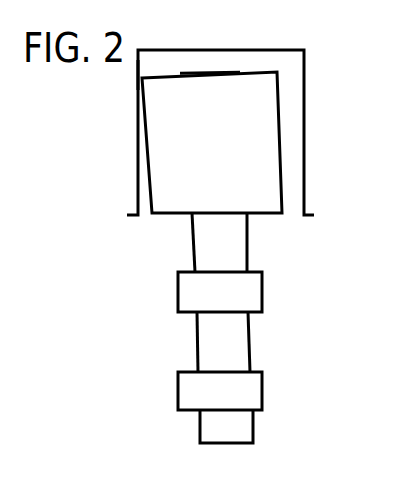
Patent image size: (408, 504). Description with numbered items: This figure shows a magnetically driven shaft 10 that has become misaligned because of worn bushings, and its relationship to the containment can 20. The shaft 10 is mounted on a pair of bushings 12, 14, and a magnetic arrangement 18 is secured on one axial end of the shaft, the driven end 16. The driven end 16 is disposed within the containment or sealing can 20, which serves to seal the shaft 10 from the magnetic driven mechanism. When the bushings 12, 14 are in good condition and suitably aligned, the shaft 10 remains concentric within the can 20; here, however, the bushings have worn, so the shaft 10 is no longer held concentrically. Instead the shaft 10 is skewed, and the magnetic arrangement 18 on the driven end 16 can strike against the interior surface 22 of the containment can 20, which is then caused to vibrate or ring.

The magnetically driven shaft 10 is at (230, 253).
The bushing 12 is at (262, 298).
The bushing 14 is at (262, 397).
The driven end 16 is at (200, 75).
The magnetic arrangement 18 is at (261, 142).
The containment can 20 is at (304, 178).
The interior surface 22 is at (140, 76).